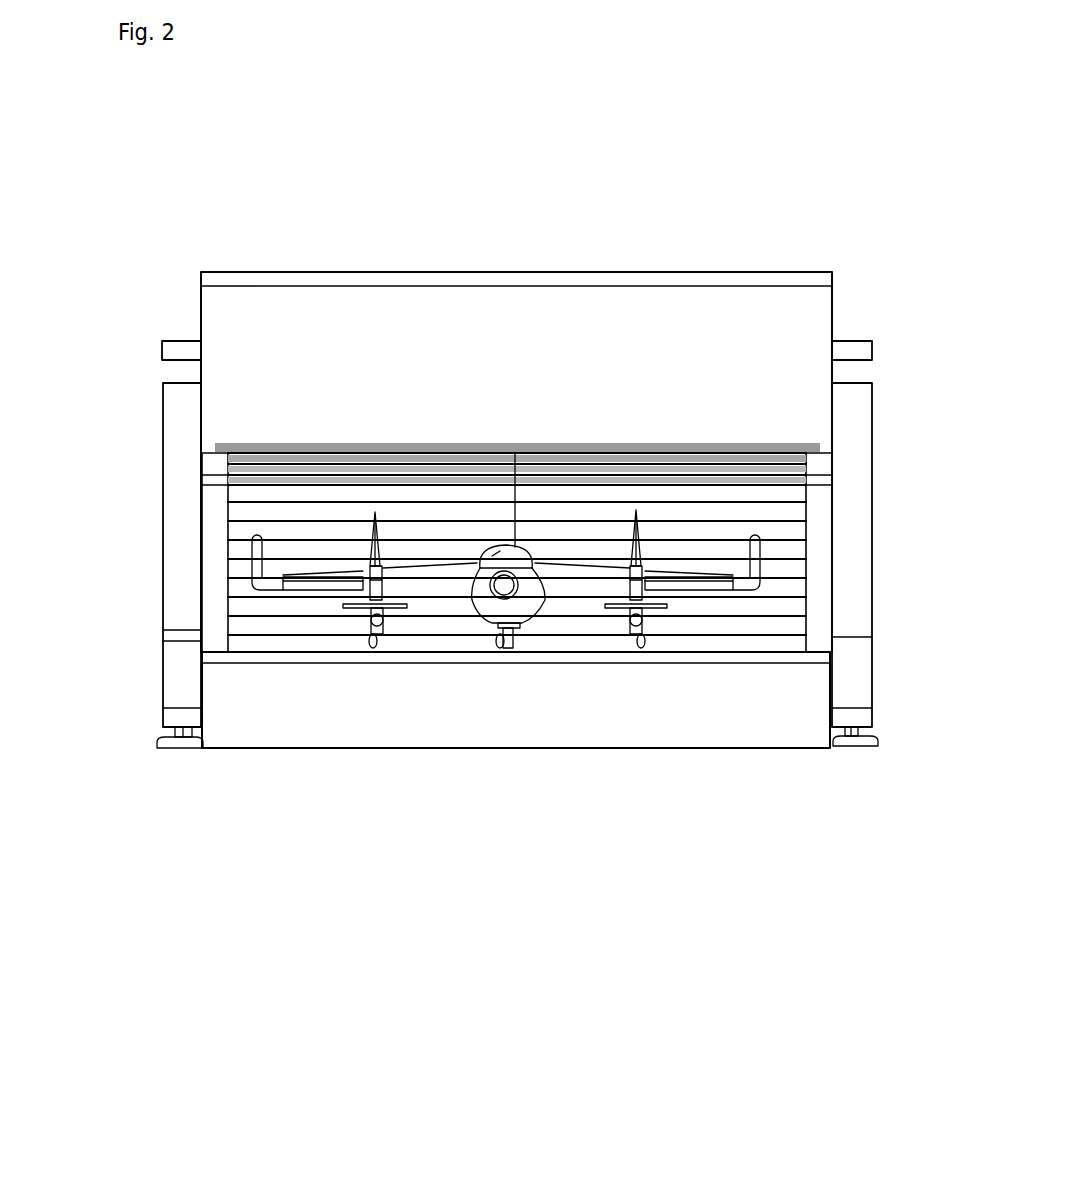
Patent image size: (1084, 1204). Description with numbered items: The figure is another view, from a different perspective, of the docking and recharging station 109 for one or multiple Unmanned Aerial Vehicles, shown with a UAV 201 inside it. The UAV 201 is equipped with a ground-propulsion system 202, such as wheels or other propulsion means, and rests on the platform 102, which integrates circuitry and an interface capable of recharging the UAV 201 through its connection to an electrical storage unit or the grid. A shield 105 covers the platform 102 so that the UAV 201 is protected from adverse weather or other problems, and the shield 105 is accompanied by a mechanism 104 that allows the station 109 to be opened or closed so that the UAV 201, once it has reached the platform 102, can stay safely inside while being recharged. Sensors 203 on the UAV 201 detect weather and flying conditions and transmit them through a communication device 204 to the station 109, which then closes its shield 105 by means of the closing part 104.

The platform 102 is at (228, 712).
The mechanism 104 is at (857, 352).
The shield 105 is at (207, 383).
The docking and recharging station 109 is at (830, 840).
The UAV 201 is at (286, 586).
The ground-propulsion system 202 is at (392, 655).
The sensors 203 is at (637, 645).
The communication device 204 is at (485, 560).